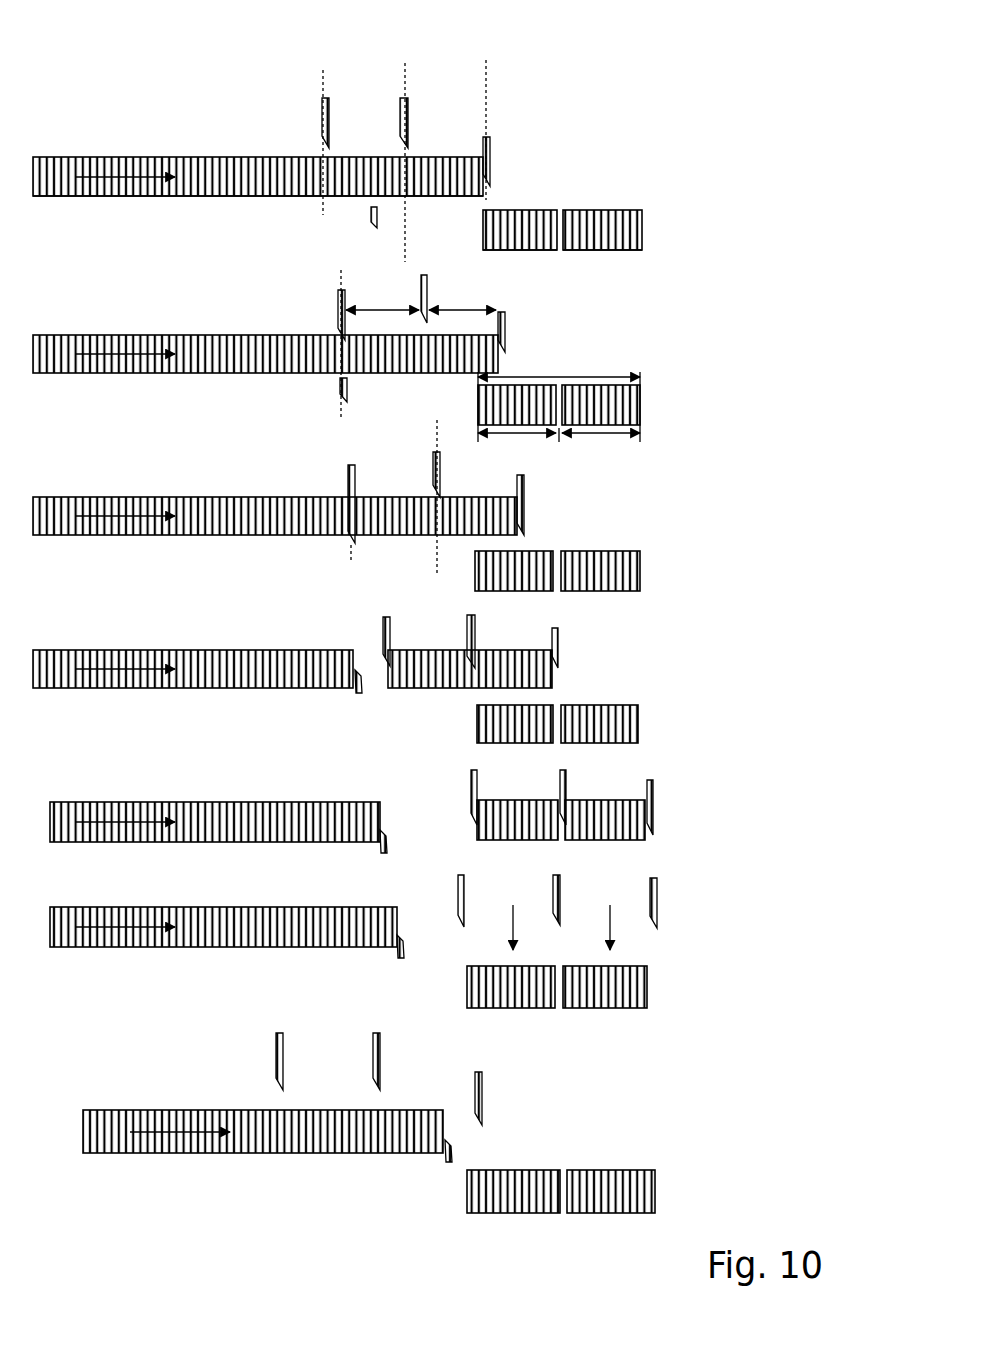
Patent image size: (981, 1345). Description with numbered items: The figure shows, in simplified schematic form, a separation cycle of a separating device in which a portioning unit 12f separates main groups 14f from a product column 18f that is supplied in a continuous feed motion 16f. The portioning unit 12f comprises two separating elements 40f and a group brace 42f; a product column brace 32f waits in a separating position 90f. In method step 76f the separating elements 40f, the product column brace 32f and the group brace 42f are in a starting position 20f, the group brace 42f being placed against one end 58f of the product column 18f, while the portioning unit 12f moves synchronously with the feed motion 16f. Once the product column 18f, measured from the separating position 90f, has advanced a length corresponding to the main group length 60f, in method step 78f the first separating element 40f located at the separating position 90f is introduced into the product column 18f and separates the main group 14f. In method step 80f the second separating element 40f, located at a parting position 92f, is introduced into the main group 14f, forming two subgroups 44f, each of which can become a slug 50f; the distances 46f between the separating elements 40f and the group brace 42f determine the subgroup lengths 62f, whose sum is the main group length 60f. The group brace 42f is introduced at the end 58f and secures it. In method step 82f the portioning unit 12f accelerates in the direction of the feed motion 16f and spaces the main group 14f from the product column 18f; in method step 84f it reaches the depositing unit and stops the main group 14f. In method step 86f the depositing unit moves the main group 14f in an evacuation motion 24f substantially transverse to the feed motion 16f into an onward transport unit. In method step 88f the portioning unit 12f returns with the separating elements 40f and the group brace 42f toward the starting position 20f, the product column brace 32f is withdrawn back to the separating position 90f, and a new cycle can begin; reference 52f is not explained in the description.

The portioning unit 12f is at (385, 448).
The main group 14f is at (598, 165).
The feed motion 16f is at (105, 180).
The product column 18f is at (145, 157).
The starting position 20f is at (323, 82).
The evacuation motion 24f is at (515, 945).
The product column brace 32f is at (368, 213).
The separating element 40f is at (322, 98).
The group brace 42f is at (490, 150).
The subgroup 44f is at (522, 252).
The distance 46f is at (411, 274).
The slug 50f is at (535, 210).
The strip portion 52f is at (205, 196).
The end 58f is at (520, 533).
The main group length 60f is at (578, 377).
The subgroup length 62f is at (523, 437).
The method step 76f is at (688, 183).
The method step 78f is at (688, 388).
The method step 80f is at (688, 510).
The method step 82f is at (688, 667).
The method step 84f is at (688, 795).
The method step 86f is at (688, 935).
The method step 88f is at (688, 1155).
The separating position 90f is at (340, 400).
The parting position 92f is at (437, 440).